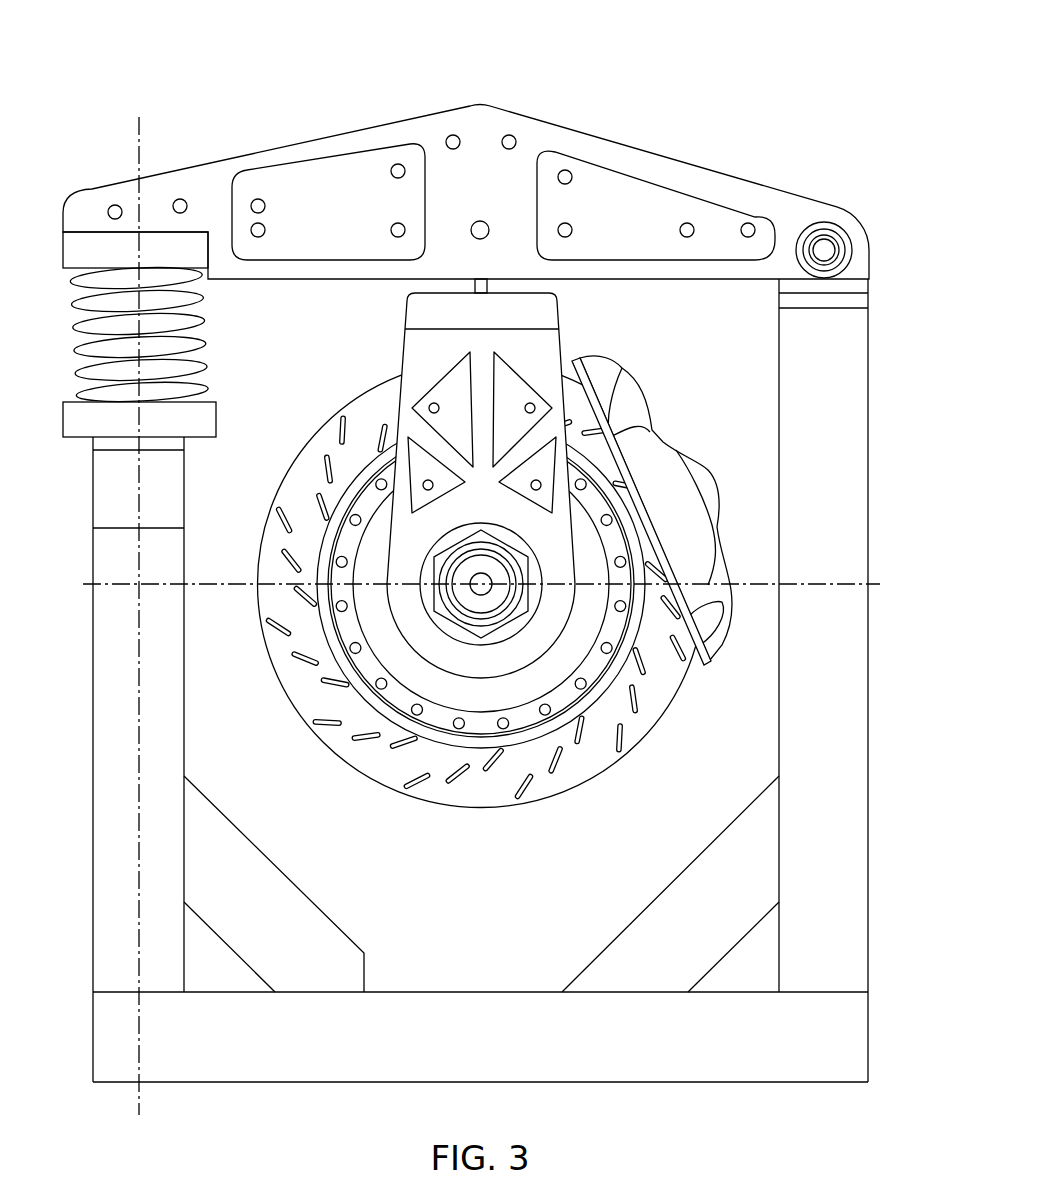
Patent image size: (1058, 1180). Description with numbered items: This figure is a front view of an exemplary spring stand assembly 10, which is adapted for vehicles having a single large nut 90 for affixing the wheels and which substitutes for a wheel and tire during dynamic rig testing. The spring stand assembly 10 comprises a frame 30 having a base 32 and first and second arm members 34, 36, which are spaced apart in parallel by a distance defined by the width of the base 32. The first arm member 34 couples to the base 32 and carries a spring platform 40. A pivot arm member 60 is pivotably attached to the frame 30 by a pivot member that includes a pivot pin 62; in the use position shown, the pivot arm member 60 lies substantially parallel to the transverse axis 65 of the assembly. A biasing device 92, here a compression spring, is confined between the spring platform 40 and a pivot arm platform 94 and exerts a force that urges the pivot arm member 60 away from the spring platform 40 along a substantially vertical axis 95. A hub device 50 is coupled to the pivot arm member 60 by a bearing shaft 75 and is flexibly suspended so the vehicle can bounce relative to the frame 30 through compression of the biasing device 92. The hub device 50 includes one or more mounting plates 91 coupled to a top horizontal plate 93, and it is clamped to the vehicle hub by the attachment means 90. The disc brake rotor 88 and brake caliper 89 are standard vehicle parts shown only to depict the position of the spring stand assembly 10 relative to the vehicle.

The spring stand assembly 10 is at (687, 112).
The frame 30 is at (83, 950).
The base 32 is at (705, 1078).
The first arm member 34 is at (93, 704).
The second arm member 36 is at (779, 718).
The spring platform 40 is at (77, 440).
The hub device 50 is at (393, 370).
The pivot arm member 60 is at (518, 109).
The pivot pin 62 is at (826, 262).
The transverse axis 65 is at (238, 590).
The bearing shaft 75 is at (486, 280).
The disc brake rotor 88 is at (483, 808).
The brake caliper 89 is at (652, 414).
The attachment means 90 is at (481, 575).
The mounting plate 91 is at (365, 605).
The biasing device 92 is at (210, 336).
The top horizontal plate 93 is at (560, 318).
The pivot arm platform 94 is at (188, 238).
The vertical axis 95 is at (138, 132).